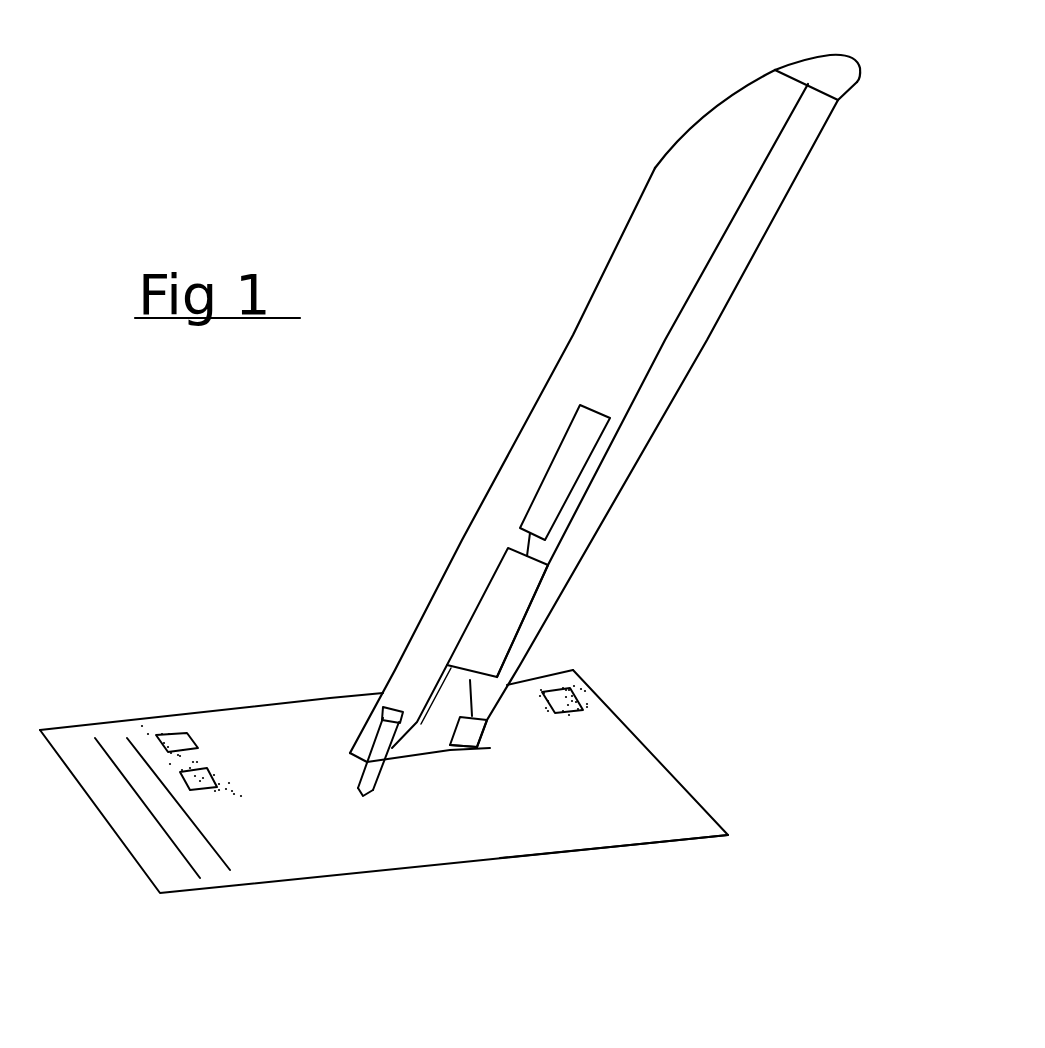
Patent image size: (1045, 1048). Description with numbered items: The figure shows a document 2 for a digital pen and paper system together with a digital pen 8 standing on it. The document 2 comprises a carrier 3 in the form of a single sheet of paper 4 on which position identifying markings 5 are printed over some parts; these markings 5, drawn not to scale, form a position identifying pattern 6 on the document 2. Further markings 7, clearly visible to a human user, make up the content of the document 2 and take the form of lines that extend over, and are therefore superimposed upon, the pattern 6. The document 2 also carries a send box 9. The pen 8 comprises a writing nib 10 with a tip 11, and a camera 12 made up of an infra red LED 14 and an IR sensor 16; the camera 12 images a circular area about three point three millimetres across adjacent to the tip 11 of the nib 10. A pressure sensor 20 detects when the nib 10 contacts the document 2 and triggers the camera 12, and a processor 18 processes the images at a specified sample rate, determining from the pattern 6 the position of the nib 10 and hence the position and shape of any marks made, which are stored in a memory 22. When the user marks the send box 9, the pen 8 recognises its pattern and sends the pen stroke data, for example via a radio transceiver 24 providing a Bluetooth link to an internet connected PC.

The document 2 is at (670, 813).
The carrier 3 is at (615, 840).
The sheet of paper 4 is at (663, 838).
The position identifying markings 5 is at (168, 733).
The position identifying pattern 6 is at (177, 735).
The further markings 7 is at (160, 730).
The pen 8 is at (597, 423).
The send box 9 is at (587, 684).
The writing nib 10 is at (360, 773).
The tip 11 is at (360, 795).
The camera 12 is at (488, 741).
The infra red LED 14 is at (458, 743).
The IR sensor 16 is at (433, 741).
The processor 18 is at (508, 618).
The pressure sensor 20 is at (385, 695).
The memory 22 is at (553, 455).
The radio transceiver 24 is at (827, 70).